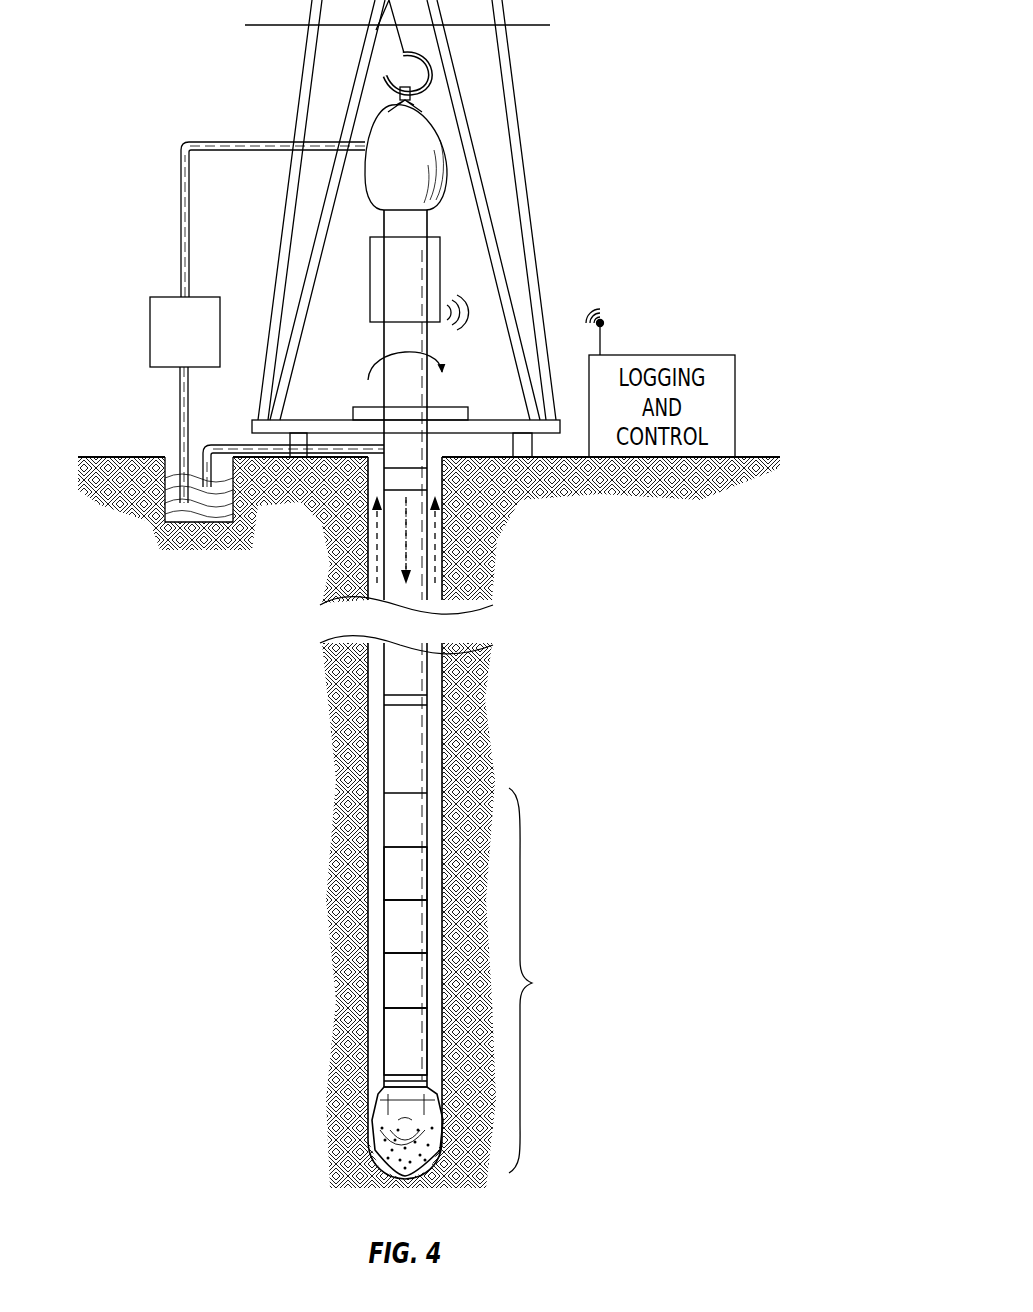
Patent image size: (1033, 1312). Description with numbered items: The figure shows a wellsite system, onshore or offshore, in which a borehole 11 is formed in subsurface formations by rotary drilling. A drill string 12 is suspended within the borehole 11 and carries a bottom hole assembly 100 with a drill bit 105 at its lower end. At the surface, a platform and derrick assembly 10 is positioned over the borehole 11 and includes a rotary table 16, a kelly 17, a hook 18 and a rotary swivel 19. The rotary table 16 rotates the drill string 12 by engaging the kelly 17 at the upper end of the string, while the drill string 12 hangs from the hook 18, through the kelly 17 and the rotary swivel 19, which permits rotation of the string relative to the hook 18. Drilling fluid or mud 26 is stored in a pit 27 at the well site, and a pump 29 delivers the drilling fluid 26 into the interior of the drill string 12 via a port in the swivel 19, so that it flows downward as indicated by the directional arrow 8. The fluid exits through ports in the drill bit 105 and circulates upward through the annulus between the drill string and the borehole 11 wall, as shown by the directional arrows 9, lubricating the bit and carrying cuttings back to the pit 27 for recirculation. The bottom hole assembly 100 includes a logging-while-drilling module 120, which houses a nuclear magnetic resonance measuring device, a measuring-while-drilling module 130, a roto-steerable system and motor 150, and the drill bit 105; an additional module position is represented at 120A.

The directional arrow 8 is at (404, 545).
The directional arrows 9 is at (376, 525).
The platform and derrick assembly 10 is at (533, 117).
The borehole 11 is at (438, 466).
The drill string 12 is at (402, 456).
The rotary table 16 is at (452, 412).
The kelly 17 is at (393, 316).
The hook 18 is at (403, 56).
The rotary swivel 19 is at (378, 187).
The drilling fluid 26 is at (197, 515).
The pit 27 is at (172, 462).
The pump 29 is at (168, 368).
The bottom hole assembly 100 is at (416, 935).
The drill bit 105 is at (380, 1122).
The logging-while-drilling module 120 is at (393, 873).
The additional LWD and/or MWD module 120A is at (393, 978).
The measuring-while-drilling module 130 is at (393, 928).
The roto-steerable system and motor 150 is at (393, 1040).